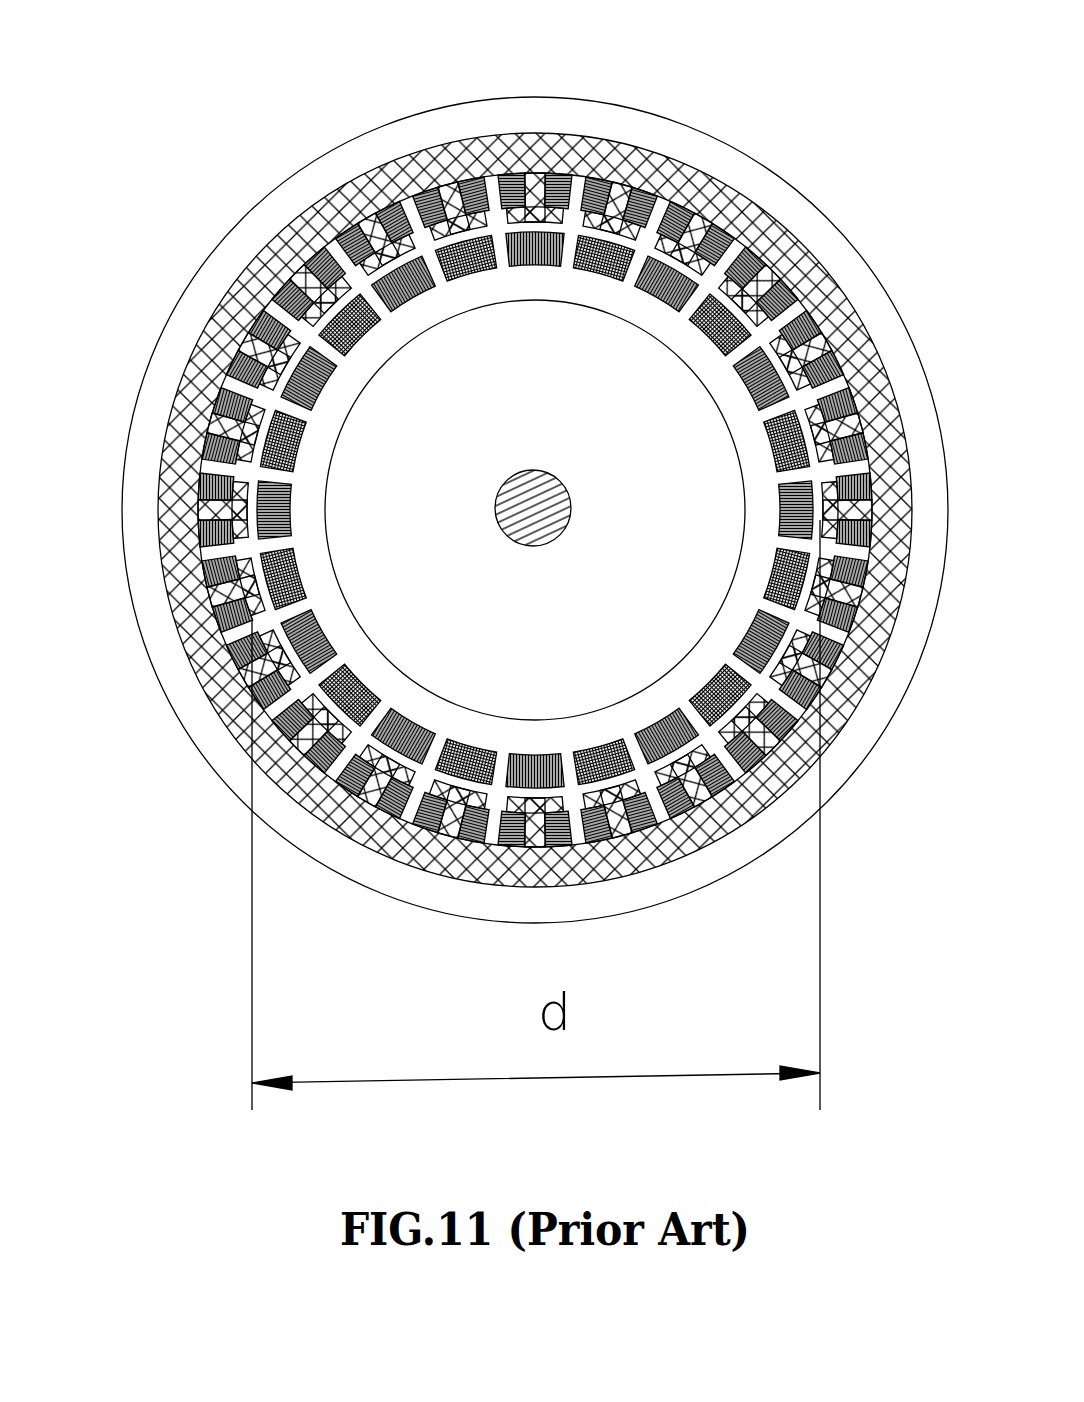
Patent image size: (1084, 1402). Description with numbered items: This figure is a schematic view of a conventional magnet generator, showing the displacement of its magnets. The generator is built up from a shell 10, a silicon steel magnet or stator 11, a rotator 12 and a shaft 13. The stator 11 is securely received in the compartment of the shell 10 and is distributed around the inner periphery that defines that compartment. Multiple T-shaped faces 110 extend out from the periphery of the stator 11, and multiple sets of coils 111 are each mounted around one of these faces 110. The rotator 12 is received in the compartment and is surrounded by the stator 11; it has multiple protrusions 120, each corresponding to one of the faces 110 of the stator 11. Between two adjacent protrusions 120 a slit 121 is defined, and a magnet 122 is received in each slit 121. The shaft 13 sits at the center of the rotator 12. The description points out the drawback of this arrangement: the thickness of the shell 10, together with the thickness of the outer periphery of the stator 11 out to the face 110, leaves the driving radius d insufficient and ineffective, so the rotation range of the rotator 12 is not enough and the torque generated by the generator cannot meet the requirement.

The shell 10 is at (448, 122).
The silicon steel magnet (stator) 11 is at (710, 175).
The T-shaped face 110 is at (555, 233).
The coil 111 is at (790, 317).
The rotator 12 is at (597, 292).
The protrusion 120 is at (780, 403).
The slit 121 is at (773, 570).
The magnet 122 is at (660, 720).
The shaft 13 is at (520, 527).